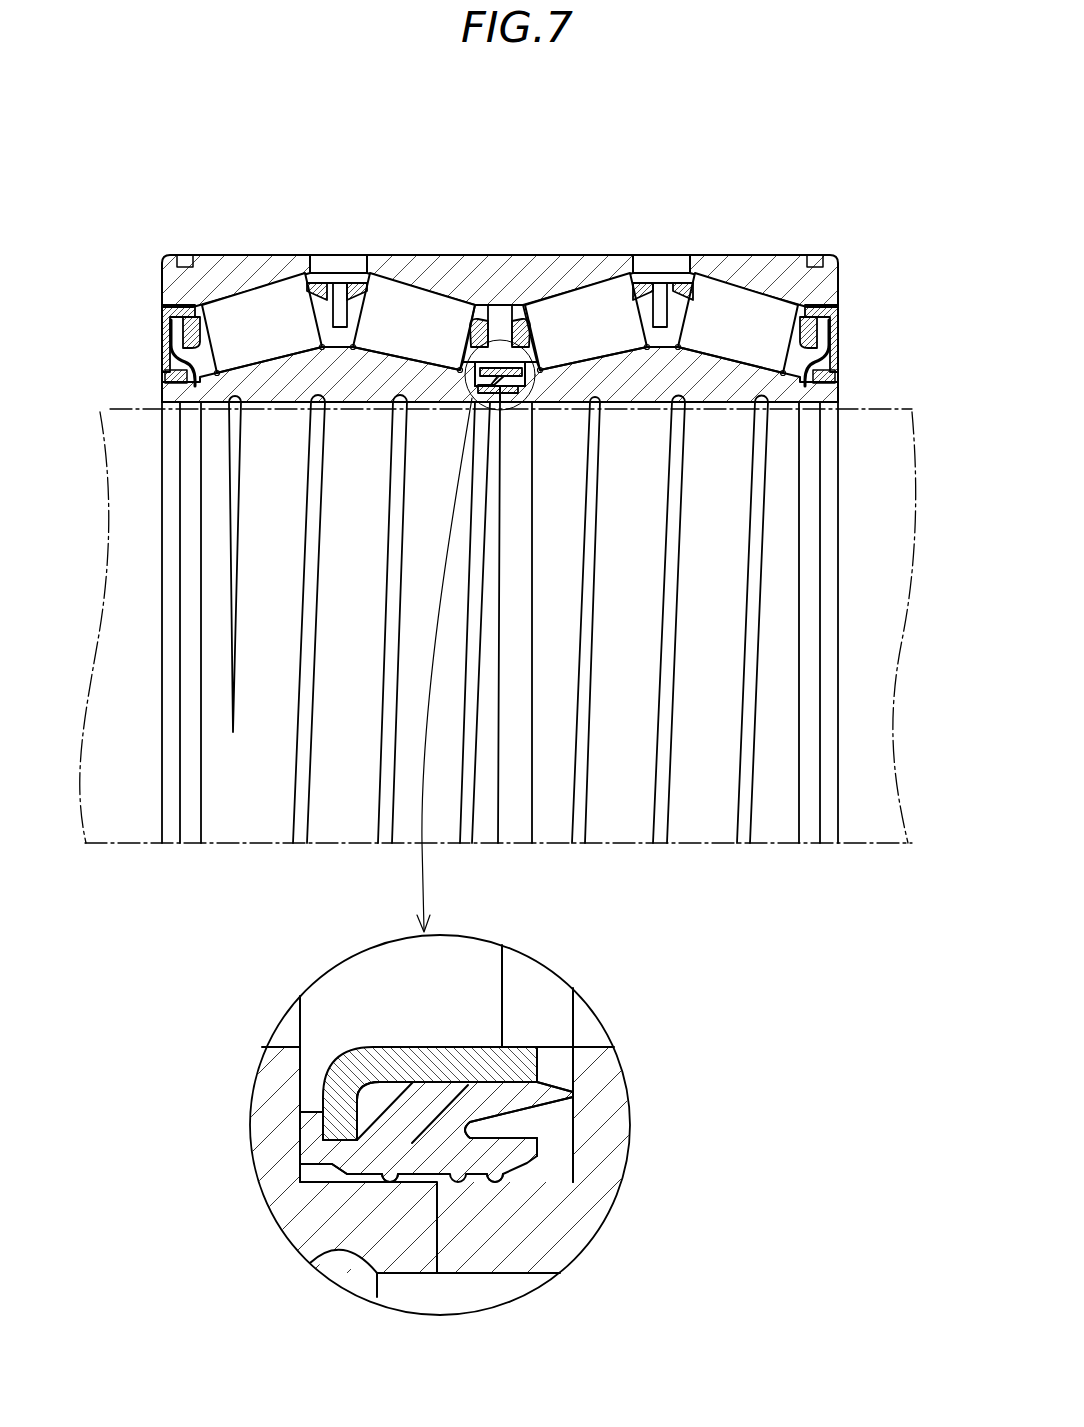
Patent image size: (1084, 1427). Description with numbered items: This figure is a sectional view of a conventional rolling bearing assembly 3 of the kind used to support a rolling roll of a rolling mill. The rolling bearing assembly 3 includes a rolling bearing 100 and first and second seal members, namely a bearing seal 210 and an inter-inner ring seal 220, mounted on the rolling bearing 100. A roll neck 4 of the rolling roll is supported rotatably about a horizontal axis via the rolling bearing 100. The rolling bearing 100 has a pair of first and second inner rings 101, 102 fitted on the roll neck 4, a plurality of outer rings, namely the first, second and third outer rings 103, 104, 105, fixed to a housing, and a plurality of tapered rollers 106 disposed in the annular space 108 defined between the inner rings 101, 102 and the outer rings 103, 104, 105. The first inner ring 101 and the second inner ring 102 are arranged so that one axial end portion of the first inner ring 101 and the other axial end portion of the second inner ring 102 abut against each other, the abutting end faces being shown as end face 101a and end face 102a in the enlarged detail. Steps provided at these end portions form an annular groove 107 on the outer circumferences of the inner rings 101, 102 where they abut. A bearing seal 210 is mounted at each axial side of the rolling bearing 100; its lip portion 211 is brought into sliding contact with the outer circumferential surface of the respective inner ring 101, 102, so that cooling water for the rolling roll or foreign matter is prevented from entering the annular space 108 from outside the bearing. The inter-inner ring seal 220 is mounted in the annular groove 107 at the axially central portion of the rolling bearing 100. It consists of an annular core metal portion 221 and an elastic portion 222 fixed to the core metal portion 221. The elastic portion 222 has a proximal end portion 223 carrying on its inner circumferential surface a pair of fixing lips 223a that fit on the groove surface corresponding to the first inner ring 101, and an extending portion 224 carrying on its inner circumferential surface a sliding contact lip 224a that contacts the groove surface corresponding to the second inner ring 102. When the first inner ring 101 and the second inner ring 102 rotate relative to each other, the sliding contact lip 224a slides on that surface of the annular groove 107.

The rolling bearing assembly 3 is at (566, 168).
The roll neck 4 is at (902, 416).
The rolling bearing 100 is at (782, 188).
The first inner ring 101 is at (279, 400).
The end face of first inner ring 101a is at (305, 1190).
The second inner ring 102 is at (712, 402).
The end face of second inner ring 102a is at (575, 1190).
The first outer ring 103 is at (241, 274).
The second outer ring 104 is at (490, 262).
The third outer ring 105 is at (760, 270).
The tapered roller 106 is at (298, 284).
The annular groove 107 is at (523, 397).
The annular space 108 is at (491, 307).
The bearing seal 210 is at (146, 324).
The lip portion 211 is at (186, 374).
The inter-inner ring seal 220 is at (489, 733).
The core metal portion 221 is at (405, 1060).
The elastic portion 222 is at (452, 1078).
The proximal end portion 223 is at (360, 1184).
The fixing lip 223a is at (389, 1184).
The extending portion 224 is at (528, 1148).
The sliding contact lip 224a is at (513, 1184).